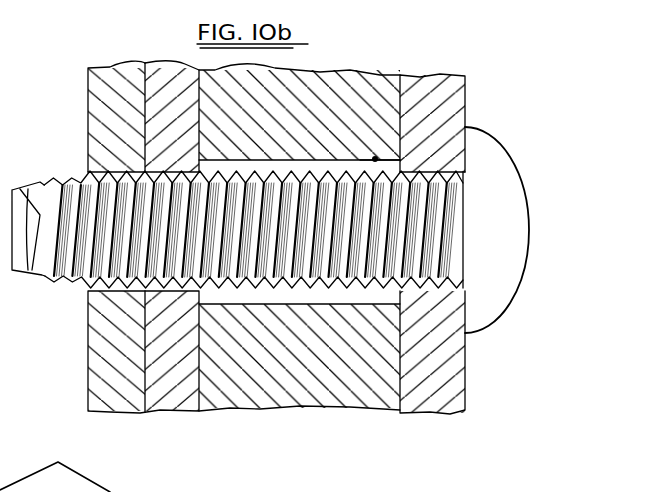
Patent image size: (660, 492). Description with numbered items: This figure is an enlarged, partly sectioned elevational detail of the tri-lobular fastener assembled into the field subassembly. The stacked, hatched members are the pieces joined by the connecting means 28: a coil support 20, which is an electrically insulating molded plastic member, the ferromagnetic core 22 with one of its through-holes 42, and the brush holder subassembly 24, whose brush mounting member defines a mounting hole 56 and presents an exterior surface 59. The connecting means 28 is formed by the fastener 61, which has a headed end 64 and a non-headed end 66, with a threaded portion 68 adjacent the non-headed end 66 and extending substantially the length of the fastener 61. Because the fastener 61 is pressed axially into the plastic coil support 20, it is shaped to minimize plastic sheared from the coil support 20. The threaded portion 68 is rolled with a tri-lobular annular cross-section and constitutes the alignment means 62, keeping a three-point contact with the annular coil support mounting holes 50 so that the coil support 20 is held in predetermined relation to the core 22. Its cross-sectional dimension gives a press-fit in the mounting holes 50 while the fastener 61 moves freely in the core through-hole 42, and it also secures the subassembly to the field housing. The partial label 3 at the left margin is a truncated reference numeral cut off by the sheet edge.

The threaded stud 3 is at (231, 211).
The coil support 20 is at (447, 100).
The ferromagnetic core 22 is at (345, 397).
The brush holder subassembly 24 is at (100, 375).
The connecting means 28 is at (375, 159).
The through-hole 42 is at (240, 293).
The coil support mounting hole 50 is at (150, 300).
The mounting hole 56 is at (98, 289).
The exterior surface 59 is at (88, 135).
The fastener 61 is at (338, 162).
The alignment means 62 is at (70, 88).
The headed end 64 is at (523, 180).
The non-headed end 66 is at (32, 188).
The threaded portion 68 is at (187, 297).